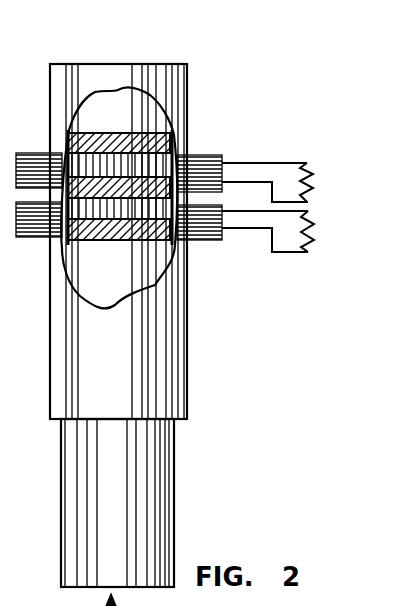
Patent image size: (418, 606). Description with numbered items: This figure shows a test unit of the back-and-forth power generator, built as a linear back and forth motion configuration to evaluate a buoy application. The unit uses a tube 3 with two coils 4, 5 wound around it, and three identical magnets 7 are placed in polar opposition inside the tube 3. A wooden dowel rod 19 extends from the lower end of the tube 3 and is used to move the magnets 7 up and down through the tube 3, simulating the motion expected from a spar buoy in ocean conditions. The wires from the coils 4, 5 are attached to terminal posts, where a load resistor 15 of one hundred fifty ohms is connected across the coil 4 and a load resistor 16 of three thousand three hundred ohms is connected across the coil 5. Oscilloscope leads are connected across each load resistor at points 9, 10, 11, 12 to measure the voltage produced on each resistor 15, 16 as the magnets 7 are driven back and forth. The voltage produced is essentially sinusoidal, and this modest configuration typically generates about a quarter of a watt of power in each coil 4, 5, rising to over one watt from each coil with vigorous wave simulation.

The tube 3 is at (187, 312).
The coil 4 is at (218, 156).
The coil 5 is at (212, 240).
The magnet 7 is at (192, 93).
The point 9 is at (312, 160).
The point 10 is at (316, 202).
The point 11 is at (311, 212).
The point 12 is at (310, 252).
The load resistor 15 is at (318, 190).
The load resistor 16 is at (312, 243).
The wooden dowel rod 19 is at (175, 528).